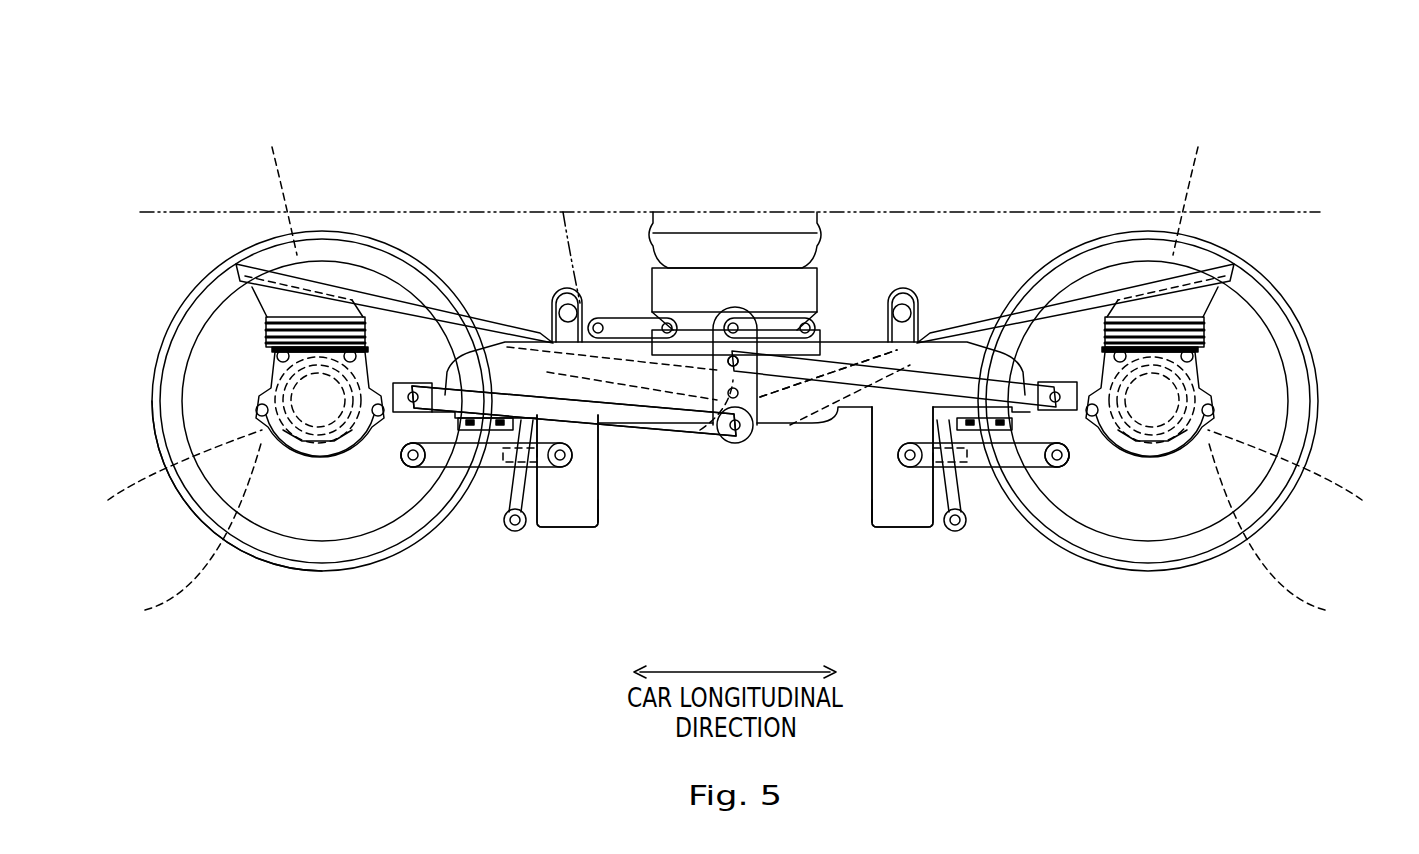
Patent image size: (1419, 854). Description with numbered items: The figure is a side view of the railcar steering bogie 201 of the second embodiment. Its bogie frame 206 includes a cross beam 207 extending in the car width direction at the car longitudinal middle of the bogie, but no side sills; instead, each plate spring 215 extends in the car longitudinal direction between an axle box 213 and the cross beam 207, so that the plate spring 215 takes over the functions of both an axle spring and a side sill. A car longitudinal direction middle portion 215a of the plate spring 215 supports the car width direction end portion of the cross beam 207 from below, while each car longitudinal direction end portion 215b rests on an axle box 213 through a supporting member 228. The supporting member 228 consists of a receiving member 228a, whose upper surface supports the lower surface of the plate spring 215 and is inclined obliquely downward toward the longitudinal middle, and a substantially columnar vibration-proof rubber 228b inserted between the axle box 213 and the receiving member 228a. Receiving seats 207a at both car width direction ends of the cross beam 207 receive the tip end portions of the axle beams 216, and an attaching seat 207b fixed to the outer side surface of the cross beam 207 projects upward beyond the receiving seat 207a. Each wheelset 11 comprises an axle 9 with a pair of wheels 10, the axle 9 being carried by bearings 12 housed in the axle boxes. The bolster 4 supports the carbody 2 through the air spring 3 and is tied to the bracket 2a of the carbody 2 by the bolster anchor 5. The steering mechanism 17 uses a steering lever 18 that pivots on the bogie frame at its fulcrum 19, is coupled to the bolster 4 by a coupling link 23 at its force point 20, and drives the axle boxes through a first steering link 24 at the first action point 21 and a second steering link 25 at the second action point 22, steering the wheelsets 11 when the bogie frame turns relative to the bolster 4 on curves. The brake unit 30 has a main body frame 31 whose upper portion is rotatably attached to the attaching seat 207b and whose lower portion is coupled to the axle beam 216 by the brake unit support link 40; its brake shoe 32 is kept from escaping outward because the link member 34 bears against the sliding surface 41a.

The carbody 2 is at (152, 212).
The bracket 2a is at (563, 212).
The air spring 3 is at (835, 268).
The bolster 4 is at (822, 300).
The bolster anchor 5 is at (627, 318).
The axle 9 is at (118, 552).
The wheel 10 is at (200, 520).
The wheelset 11 is at (735, 429).
The bearing 12 is at (734, 471).
The steering mechanism 17 is at (672, 440).
The steering lever 18 is at (748, 230).
The fulcrum 19 is at (745, 440).
The force point 20 is at (722, 318).
The first action point 21 is at (736, 445).
The second action point 22 is at (712, 430).
The coupling link 23 is at (768, 318).
The first steering link 24 is at (623, 417).
The second steering link 25 is at (863, 410).
The brake unit 30 is at (592, 537).
The main body frame 31 is at (577, 530).
The brake shoe 32 is at (470, 470).
The link member 34 is at (515, 532).
The brake unit support link 40 is at (413, 470).
The sliding surface 41a is at (525, 470).
The steering bogie 201 is at (254, 609).
The bogie frame 206 is at (688, 320).
The cross beam 207 is at (826, 330).
The receiving seat 207a is at (527, 335).
The attaching seat 207b is at (567, 285).
The axle box 213 is at (257, 390).
The plate spring 215 is at (1000, 386).
The car longitudinal direction middle portion 215a is at (787, 400).
The car longitudinal direction end portion 215b is at (735, 183).
The axle beam 216 is at (417, 370).
The supporting member 228 is at (733, 290).
The receiving member 228a is at (253, 300).
The vibration-proof rubber 228b is at (258, 335).